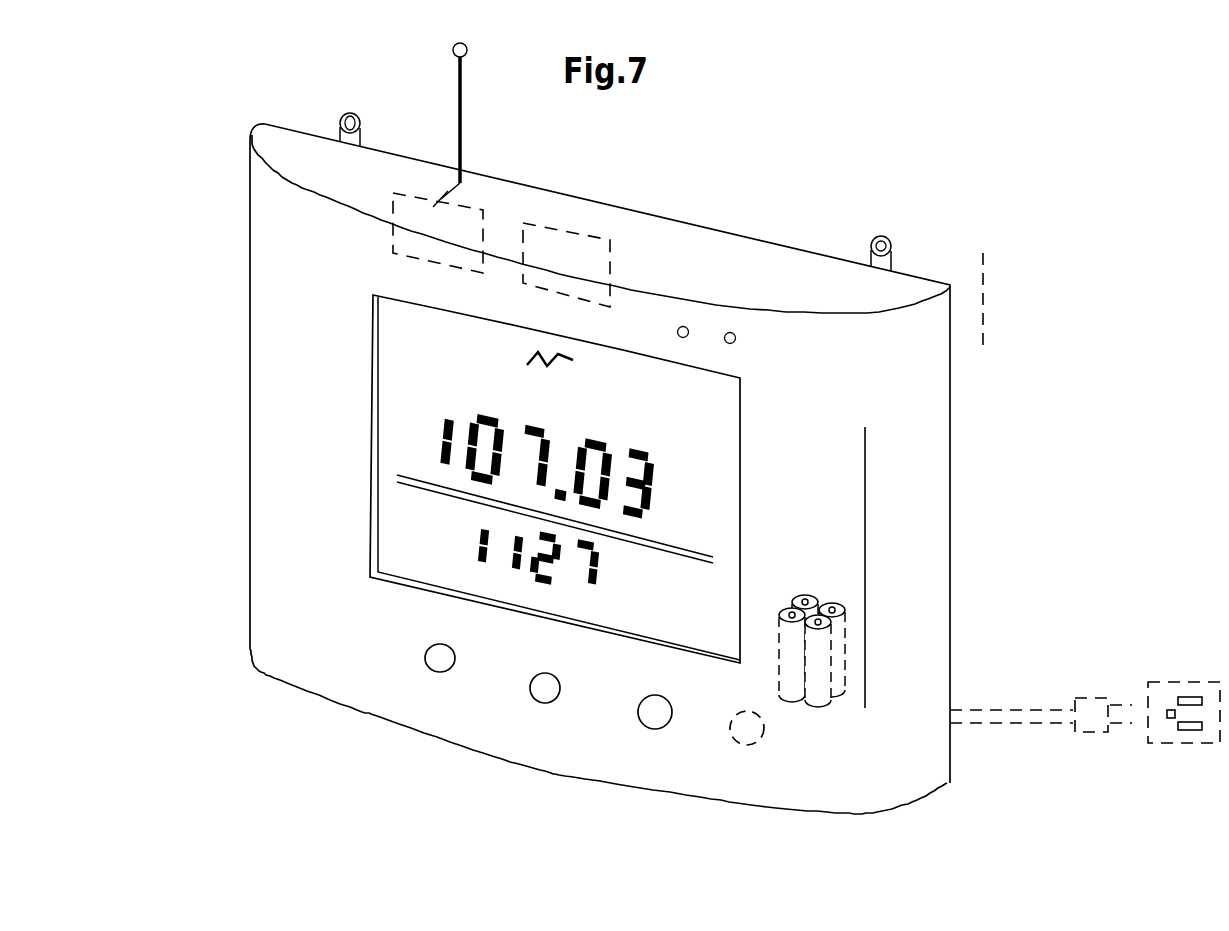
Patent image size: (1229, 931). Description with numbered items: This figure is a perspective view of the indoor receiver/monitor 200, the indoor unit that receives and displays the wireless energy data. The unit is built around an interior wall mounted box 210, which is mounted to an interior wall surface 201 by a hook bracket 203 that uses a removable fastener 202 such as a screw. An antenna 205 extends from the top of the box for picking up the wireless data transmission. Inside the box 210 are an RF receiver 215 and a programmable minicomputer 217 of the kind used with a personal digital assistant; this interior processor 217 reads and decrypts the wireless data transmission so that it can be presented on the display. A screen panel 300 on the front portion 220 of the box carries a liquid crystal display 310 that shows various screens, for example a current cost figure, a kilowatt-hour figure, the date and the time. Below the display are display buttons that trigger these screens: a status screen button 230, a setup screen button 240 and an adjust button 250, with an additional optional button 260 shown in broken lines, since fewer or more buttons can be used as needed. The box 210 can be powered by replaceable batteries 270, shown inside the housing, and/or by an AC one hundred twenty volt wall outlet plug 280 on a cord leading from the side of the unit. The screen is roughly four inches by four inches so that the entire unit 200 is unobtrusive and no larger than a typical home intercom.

The indoor receiver/monitor 200 is at (203, 139).
The interior wall surface 201 is at (1015, 332).
The hook / nail 202 is at (952, 232).
The hook bracket 203 is at (955, 217).
The antenna 205 is at (403, 125).
The interior wall mounted box 210 is at (600, 463).
The RF receiver 215 is at (358, 171).
The programmable minicomputer 217 is at (587, 267).
The front portion 220 is at (541, 224).
The status screen button 230 is at (324, 722).
The setup screen button 240 is at (431, 755).
The adjust button 250 is at (538, 777).
The button (optional) 260 is at (632, 796).
The replaceable batteries 270 is at (921, 635).
The AC 120 volt wall outlet plug 280 is at (1085, 675).
The screen panel 300 is at (599, 479).
The liquid crystal display (LCD) 310 is at (730, 475).